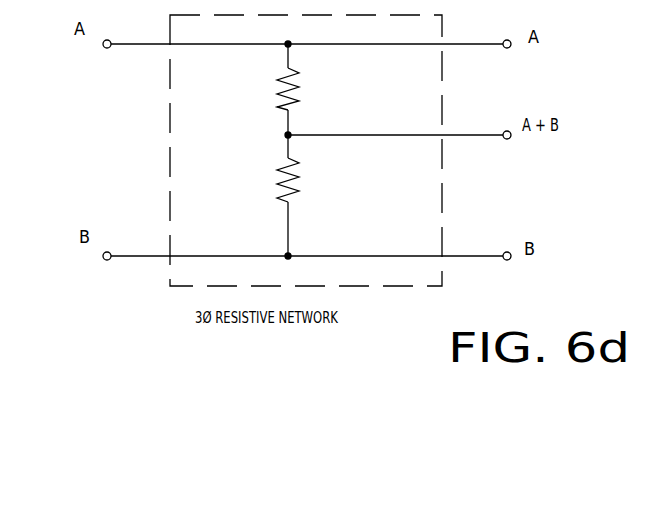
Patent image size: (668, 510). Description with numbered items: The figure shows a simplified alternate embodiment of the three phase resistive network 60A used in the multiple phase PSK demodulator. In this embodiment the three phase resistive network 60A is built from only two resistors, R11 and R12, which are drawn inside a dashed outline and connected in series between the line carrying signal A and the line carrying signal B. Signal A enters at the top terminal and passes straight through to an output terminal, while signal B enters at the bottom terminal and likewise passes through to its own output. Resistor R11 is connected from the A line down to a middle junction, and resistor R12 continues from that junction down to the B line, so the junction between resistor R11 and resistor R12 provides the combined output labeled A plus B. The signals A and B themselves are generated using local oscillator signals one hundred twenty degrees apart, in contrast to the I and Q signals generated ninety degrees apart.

The three phase resistive network 60A is at (306, 150).
The resistor R11 is at (304, 89).
The resistor R12 is at (305, 180).